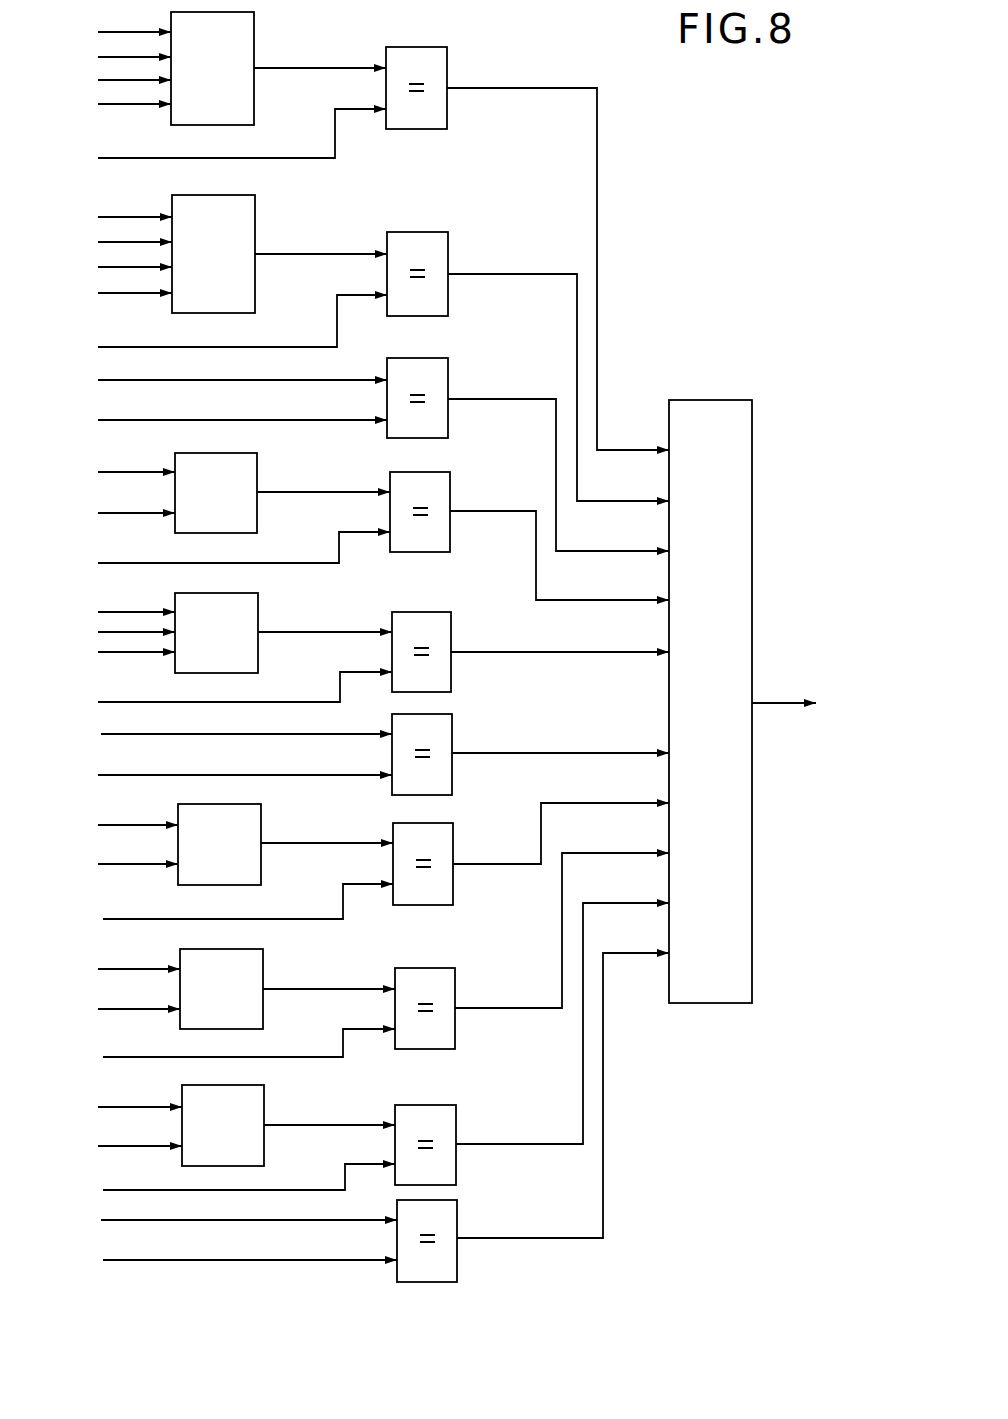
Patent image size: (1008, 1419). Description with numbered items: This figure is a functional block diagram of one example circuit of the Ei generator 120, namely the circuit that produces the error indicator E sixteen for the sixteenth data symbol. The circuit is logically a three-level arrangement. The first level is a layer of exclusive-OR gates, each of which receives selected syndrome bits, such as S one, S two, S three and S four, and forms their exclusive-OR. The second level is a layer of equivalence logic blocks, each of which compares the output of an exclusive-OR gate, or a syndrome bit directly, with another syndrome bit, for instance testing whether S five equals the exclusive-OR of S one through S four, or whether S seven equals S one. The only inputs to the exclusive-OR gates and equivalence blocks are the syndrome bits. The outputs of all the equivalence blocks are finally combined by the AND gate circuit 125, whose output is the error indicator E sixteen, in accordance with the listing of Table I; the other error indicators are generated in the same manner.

The Ei generator 120 is at (650, 192).
The AND gate circuit 125 is at (703, 400).